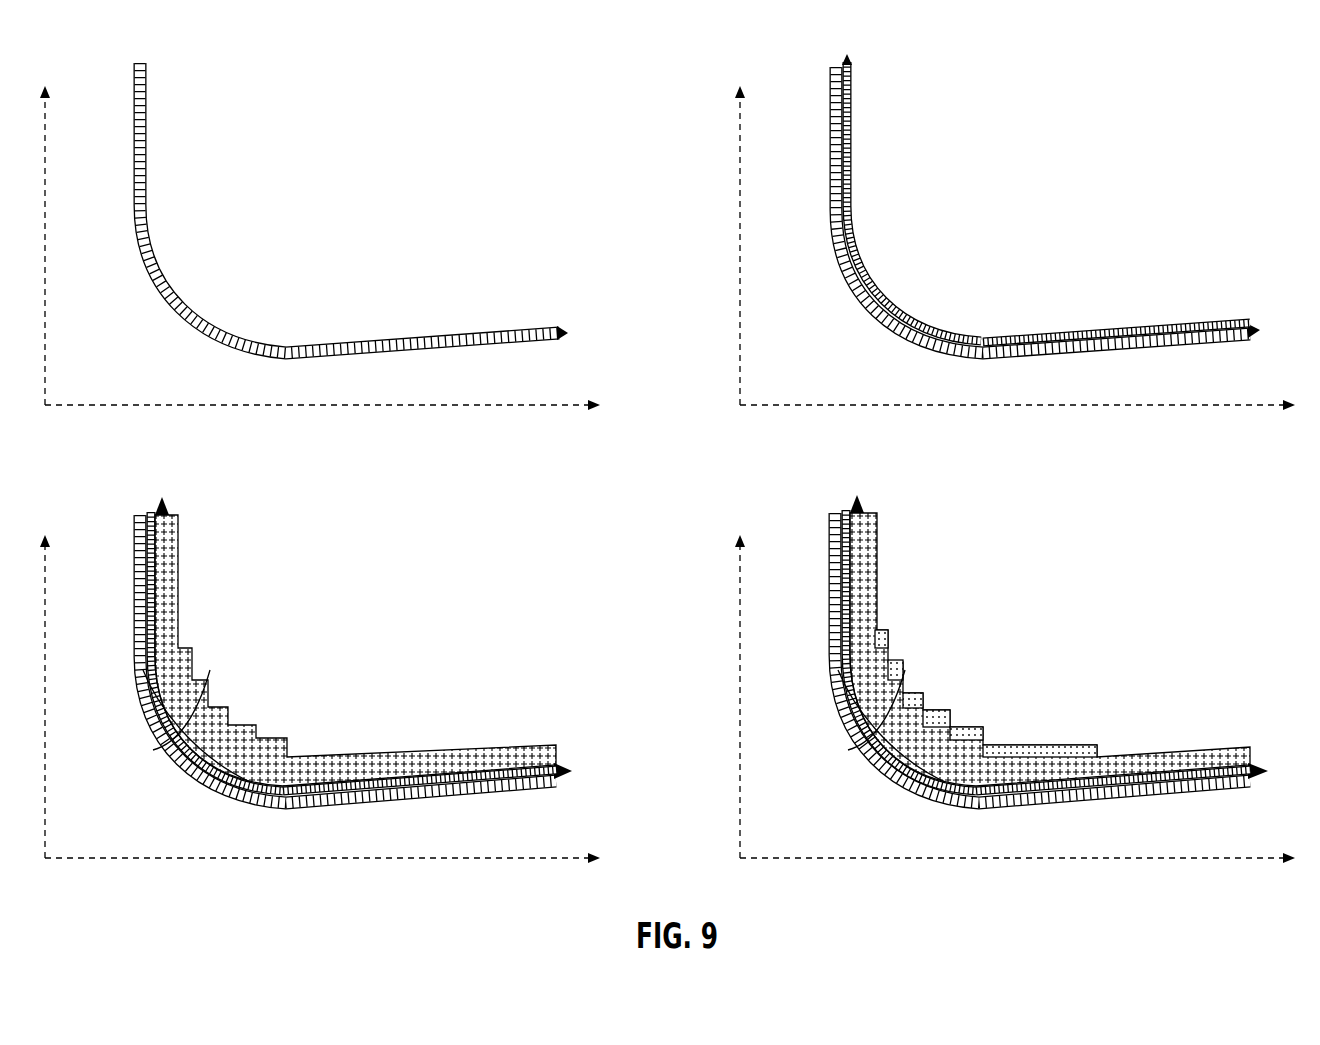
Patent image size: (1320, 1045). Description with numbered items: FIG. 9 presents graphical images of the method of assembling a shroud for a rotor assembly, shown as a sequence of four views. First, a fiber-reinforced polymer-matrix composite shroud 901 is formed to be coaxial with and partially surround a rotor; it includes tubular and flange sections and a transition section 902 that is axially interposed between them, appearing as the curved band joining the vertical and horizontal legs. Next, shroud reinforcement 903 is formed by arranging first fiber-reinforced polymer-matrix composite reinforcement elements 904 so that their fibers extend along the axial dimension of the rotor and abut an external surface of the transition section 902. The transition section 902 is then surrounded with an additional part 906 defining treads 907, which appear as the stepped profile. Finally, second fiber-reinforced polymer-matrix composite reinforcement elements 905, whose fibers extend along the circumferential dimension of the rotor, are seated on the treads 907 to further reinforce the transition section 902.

The fiber-reinforced polymer-matrix composite shroud 901 is at (148, 61).
The transition section 902 is at (198, 300).
The shroud reinforcement 903 is at (858, 126).
The first fiber-reinforced polymer-matrix composite reinforcement elements 904 is at (1052, 332).
The second fiber-reinforced polymer-matrix composite reinforcement elements 905 is at (925, 700).
The additional part 906 is at (150, 708).
The treads 907 is at (153, 750).